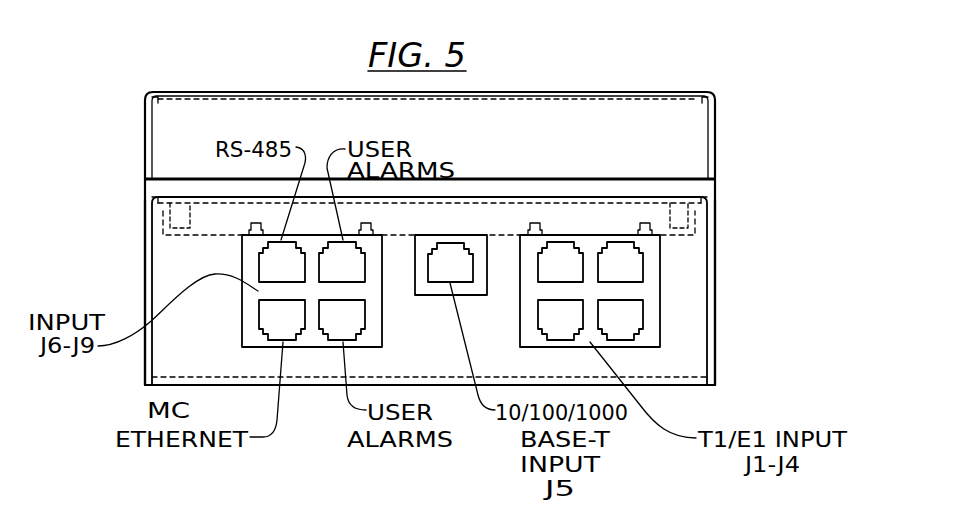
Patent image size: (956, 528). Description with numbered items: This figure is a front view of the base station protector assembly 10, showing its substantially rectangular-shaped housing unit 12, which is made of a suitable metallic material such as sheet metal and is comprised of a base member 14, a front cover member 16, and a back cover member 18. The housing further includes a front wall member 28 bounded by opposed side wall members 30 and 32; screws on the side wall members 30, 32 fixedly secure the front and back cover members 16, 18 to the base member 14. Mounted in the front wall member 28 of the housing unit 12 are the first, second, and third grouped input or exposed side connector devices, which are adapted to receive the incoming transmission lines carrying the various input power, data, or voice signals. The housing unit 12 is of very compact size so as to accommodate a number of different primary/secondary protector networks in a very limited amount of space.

The base station protector assembly 10 is at (172, 58).
The housing unit 12 is at (721, 225).
The base member 14 is at (303, 388).
The front cover member 16 is at (197, 316).
The back cover member 18 is at (608, 84).
The front wall member 28 is at (433, 345).
The side wall member 30 is at (143, 302).
The side wall member 32 is at (717, 300).